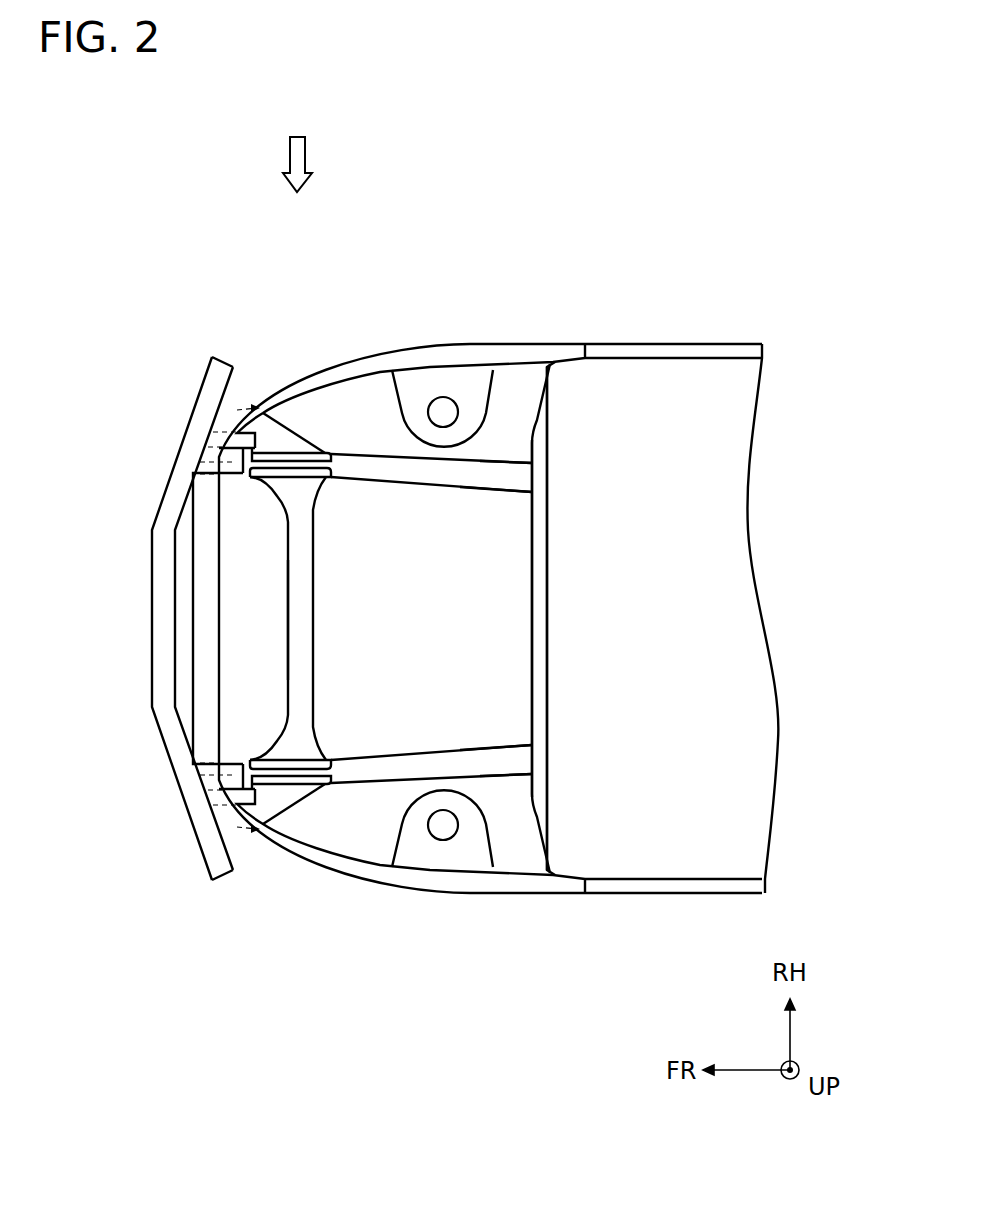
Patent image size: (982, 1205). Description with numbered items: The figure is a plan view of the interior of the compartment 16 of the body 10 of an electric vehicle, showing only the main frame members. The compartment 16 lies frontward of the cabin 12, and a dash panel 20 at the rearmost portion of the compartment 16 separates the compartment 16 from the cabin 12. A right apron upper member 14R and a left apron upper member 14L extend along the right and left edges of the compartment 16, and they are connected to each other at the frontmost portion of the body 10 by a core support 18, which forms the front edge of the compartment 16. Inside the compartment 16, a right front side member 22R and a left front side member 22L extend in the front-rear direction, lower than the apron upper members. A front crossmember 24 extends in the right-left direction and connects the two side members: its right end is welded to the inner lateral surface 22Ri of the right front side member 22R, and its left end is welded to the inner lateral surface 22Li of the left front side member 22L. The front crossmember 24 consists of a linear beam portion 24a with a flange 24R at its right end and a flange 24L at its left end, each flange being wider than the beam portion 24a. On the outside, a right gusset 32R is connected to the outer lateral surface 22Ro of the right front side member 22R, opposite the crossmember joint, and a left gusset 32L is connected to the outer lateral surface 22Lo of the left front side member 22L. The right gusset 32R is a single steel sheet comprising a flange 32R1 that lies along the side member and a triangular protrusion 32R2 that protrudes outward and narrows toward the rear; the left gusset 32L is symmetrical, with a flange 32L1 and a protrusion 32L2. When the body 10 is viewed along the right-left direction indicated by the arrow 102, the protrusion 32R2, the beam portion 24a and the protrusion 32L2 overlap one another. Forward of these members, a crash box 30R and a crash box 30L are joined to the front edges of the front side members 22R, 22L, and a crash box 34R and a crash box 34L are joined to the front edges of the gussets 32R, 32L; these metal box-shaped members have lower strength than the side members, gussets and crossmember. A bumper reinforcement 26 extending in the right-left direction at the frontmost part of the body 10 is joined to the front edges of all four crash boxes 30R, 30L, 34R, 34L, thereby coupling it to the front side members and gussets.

The body 10 is at (128, 196).
The arrow 102 is at (308, 155).
The compartment 16 is at (318, 273).
The cabin 12 is at (680, 395).
The right apron upper member 14R is at (455, 350).
The left apron upper member 14L is at (455, 887).
The core support 18 is at (205, 630).
The dash panel 20 is at (538, 520).
The right front side member 22R is at (357, 465).
The left front side member 22L is at (357, 770).
The outer lateral surface 22Ro is at (497, 458).
The inner lateral surface 22Ri is at (467, 490).
The outer lateral surface 22Lo is at (497, 780).
The inner lateral surface 22Li is at (467, 748).
The front crossmember 24 is at (193, 618).
The beam portion 24a is at (298, 580).
The flange 24R is at (265, 480).
The flange 24L is at (262, 755).
The bumper reinforcement 26 is at (162, 568).
The crash box 30R is at (243, 462).
The crash box 30L is at (243, 775).
The right gusset 32R is at (282, 364).
The flange 32R1 is at (323, 455).
The protrusion 32R2 is at (283, 433).
The left gusset 32L is at (280, 873).
The flange 32L1 is at (323, 782).
The protrusion 32L2 is at (283, 805).
The crash box 34R is at (237, 410).
The crash box 34L is at (237, 827).